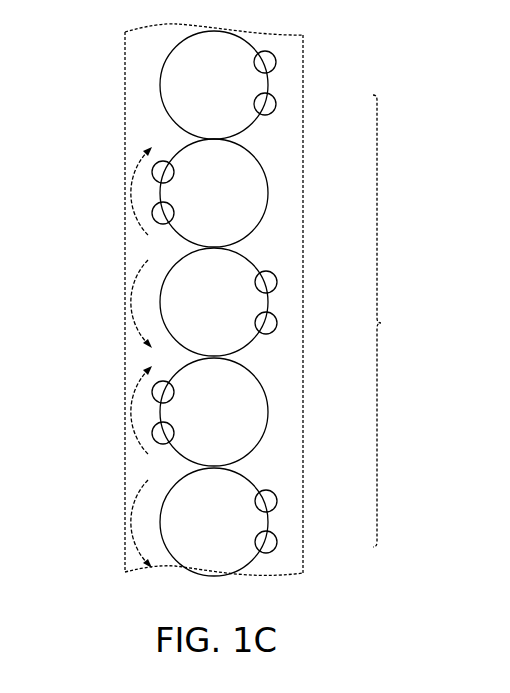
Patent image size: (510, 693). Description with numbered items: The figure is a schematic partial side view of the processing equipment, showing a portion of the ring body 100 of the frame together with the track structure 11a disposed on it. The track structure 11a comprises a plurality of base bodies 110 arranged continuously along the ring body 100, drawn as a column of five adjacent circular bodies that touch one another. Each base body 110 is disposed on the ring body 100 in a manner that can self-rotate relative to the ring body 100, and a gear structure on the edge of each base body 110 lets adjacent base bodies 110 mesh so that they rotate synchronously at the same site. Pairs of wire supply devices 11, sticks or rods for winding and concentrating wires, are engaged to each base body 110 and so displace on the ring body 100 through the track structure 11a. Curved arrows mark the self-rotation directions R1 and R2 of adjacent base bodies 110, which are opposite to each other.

The ring body 100 is at (303, 68).
The base body 110 is at (228, 85).
The wire supply device 11 is at (264, 61).
The track structure 11a is at (396, 321).
The self-rotation direction R1 is at (132, 302).
The self-rotation direction R2 is at (131, 192).